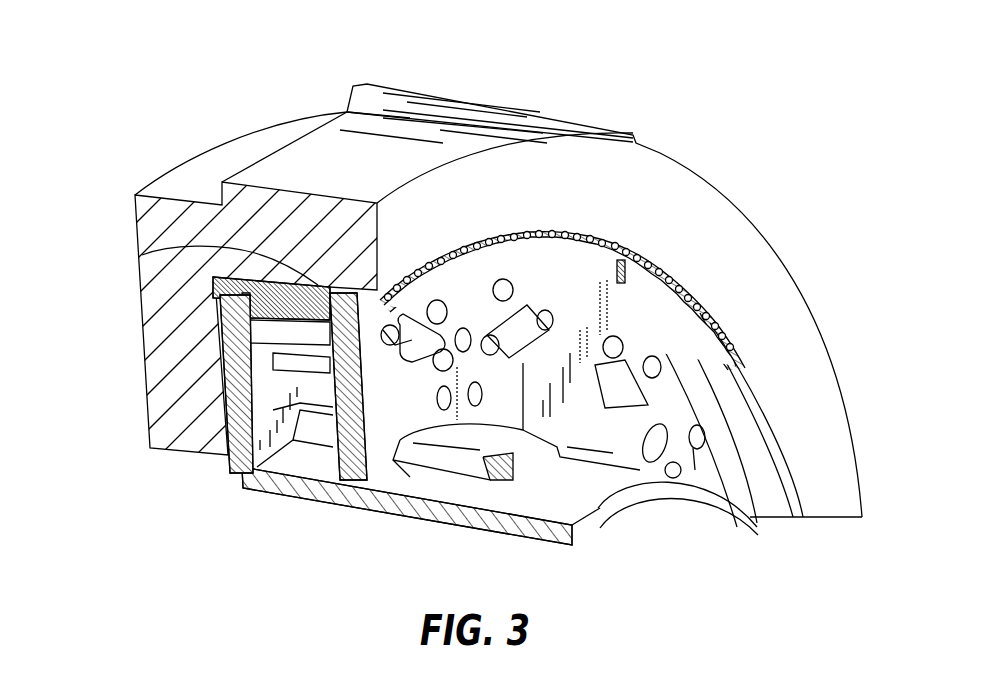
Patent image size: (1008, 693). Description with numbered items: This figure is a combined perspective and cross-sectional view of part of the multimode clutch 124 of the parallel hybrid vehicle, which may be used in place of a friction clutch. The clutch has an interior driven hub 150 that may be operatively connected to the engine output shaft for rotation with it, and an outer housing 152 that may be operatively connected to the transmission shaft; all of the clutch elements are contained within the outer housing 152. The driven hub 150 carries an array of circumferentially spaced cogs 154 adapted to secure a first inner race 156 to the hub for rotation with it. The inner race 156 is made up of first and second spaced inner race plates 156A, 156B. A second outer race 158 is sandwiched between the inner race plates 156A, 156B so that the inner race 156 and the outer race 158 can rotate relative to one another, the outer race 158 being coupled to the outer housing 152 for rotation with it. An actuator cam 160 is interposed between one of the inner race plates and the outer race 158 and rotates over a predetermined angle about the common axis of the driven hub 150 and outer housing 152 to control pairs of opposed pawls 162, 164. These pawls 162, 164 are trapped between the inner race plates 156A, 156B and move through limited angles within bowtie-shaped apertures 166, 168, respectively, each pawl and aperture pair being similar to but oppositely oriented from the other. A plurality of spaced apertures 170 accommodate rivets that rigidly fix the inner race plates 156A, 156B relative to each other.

The multimode clutch 124 is at (92, 97).
The driven hub 150 is at (547, 507).
The outer housing 152 is at (639, 201).
The cogs 154 is at (440, 470).
The inner race 156 is at (261, 426).
The first inner race plate 156A is at (263, 480).
The second inner race plate 156B is at (373, 462).
The outer race 158 is at (247, 332).
The actuator cam 160 is at (143, 262).
The pawl 162 is at (413, 333).
The pawl 164 is at (697, 473).
The bowtie-shaped aperture 166 is at (383, 330).
The bowtie-shaped aperture 168 is at (523, 310).
The spaced apertures 170 is at (458, 380).